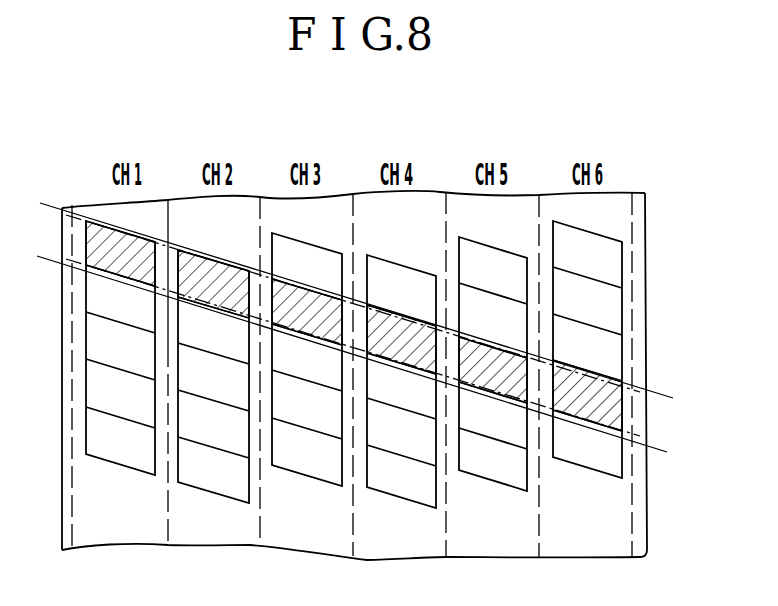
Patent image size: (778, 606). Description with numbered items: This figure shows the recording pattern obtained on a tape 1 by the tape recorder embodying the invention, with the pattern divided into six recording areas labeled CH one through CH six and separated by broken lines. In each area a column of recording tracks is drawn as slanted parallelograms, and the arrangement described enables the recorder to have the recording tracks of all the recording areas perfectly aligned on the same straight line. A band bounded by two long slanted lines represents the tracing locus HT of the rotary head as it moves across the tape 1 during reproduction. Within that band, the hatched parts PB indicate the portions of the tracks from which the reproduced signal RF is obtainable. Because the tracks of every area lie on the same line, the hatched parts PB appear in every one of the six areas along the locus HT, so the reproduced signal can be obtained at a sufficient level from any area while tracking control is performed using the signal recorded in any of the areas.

The magnetic tape 1 is at (638, 219).
The tracing locus of the head HT is at (51, 253).
The hatched parts PB is at (617, 403).